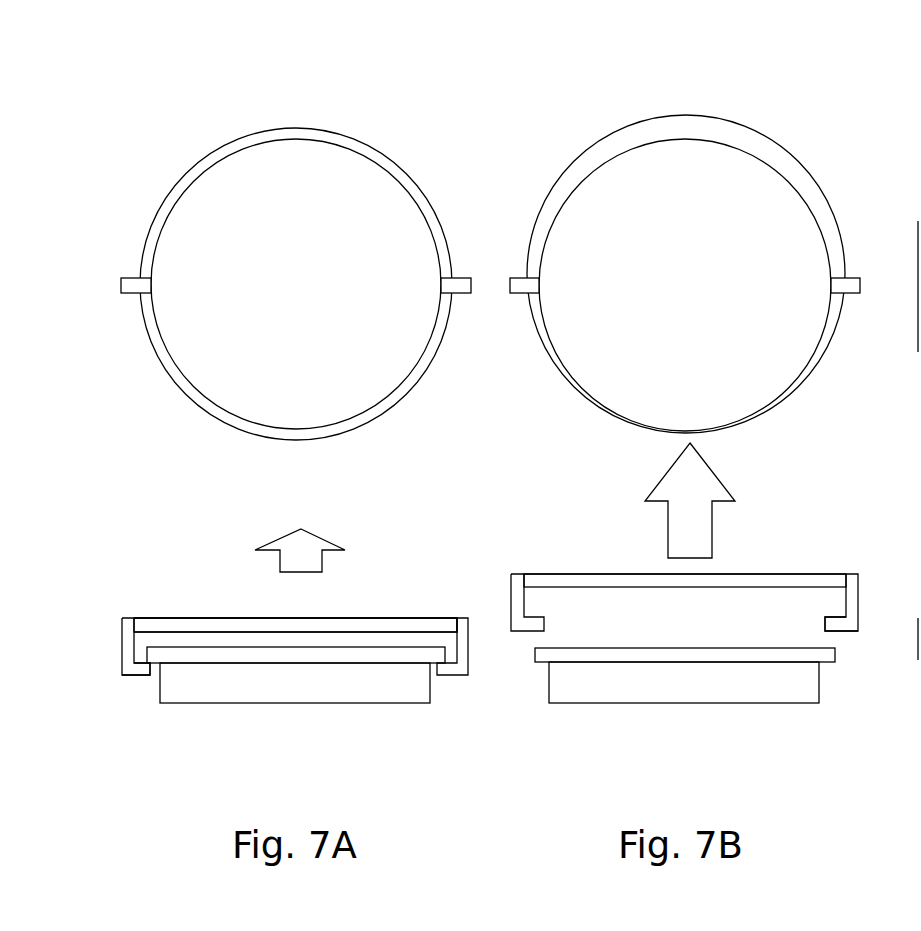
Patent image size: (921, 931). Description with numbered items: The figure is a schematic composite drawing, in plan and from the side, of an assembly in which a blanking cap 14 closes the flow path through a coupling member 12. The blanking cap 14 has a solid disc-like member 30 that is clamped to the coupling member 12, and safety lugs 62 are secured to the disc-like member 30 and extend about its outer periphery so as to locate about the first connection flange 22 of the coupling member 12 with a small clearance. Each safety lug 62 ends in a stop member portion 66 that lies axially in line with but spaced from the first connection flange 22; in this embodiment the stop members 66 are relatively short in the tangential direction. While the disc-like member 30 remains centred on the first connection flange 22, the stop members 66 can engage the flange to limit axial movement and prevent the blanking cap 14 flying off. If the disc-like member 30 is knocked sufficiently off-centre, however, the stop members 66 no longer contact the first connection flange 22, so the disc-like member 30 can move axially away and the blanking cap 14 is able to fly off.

In FIG. 7A, the coupling member 12 is at (407, 697).
In FIG. 7B, the coupling member 12 is at (802, 690).
In FIG. 7A, the blanking cap 14 is at (403, 626).
In FIG. 7A, the first connection flange 22 is at (210, 653).
In FIG. 7B, the first connection flange 22 is at (797, 160).
In FIG. 7A, the disc-like member 30 is at (296, 183).
In FIG. 7B, the disc-like member 30 is at (777, 388).
In FIG. 7A, the safety lug 62 is at (470, 284).
In FIG. 7B, the safety lug 62 is at (520, 294).
In FIG. 7A, the stop member portion 66 is at (143, 670).
In FIG. 7B, the stop member portion 66 is at (832, 612).